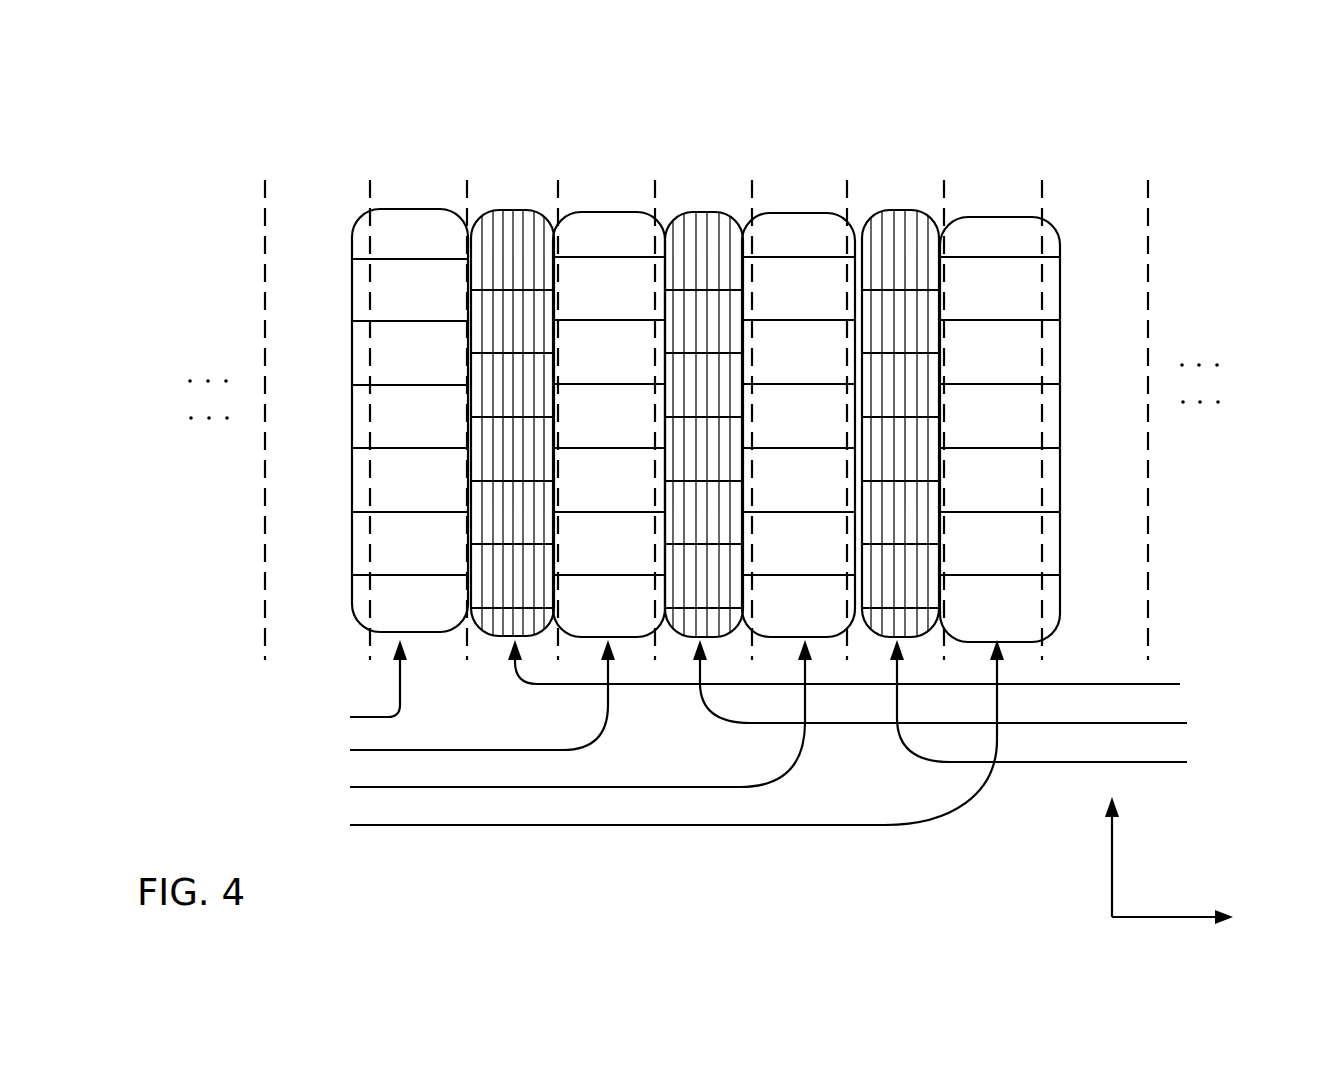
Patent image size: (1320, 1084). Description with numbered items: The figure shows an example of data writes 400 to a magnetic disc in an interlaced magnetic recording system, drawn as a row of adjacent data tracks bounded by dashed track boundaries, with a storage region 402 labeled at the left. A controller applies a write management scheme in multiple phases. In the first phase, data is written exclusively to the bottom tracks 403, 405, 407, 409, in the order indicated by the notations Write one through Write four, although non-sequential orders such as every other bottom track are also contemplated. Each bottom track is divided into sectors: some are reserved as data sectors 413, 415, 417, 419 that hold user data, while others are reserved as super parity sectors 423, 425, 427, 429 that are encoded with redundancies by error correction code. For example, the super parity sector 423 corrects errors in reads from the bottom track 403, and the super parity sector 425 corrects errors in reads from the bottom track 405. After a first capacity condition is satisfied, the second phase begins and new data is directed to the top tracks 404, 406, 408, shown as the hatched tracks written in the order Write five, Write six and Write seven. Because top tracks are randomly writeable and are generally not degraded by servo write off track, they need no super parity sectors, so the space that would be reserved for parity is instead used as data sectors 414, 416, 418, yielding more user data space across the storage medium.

The data writes 400 is at (285, 144).
The data storage medium region 402 is at (341, 267).
The bottom track 403 is at (418, 178).
The top track 404 is at (515, 178).
The bottom track 405 is at (603, 178).
The top track 406 is at (703, 178).
The bottom track 407 is at (803, 178).
The top track 408 is at (897, 178).
The bottom track 409 is at (993, 178).
The data sector 413 is at (399, 297).
The data sector 414 is at (495, 269).
The data sector 415 is at (584, 299).
The data sector 416 is at (685, 268).
The data sector 417 is at (783, 299).
The data sector 418 is at (879, 261).
The data sector 419 is at (971, 296).
The super parity sector 423 is at (399, 360).
The super parity sector 425 is at (584, 488).
The super parity sector 427 is at (783, 428).
The super parity sector 429 is at (971, 361).